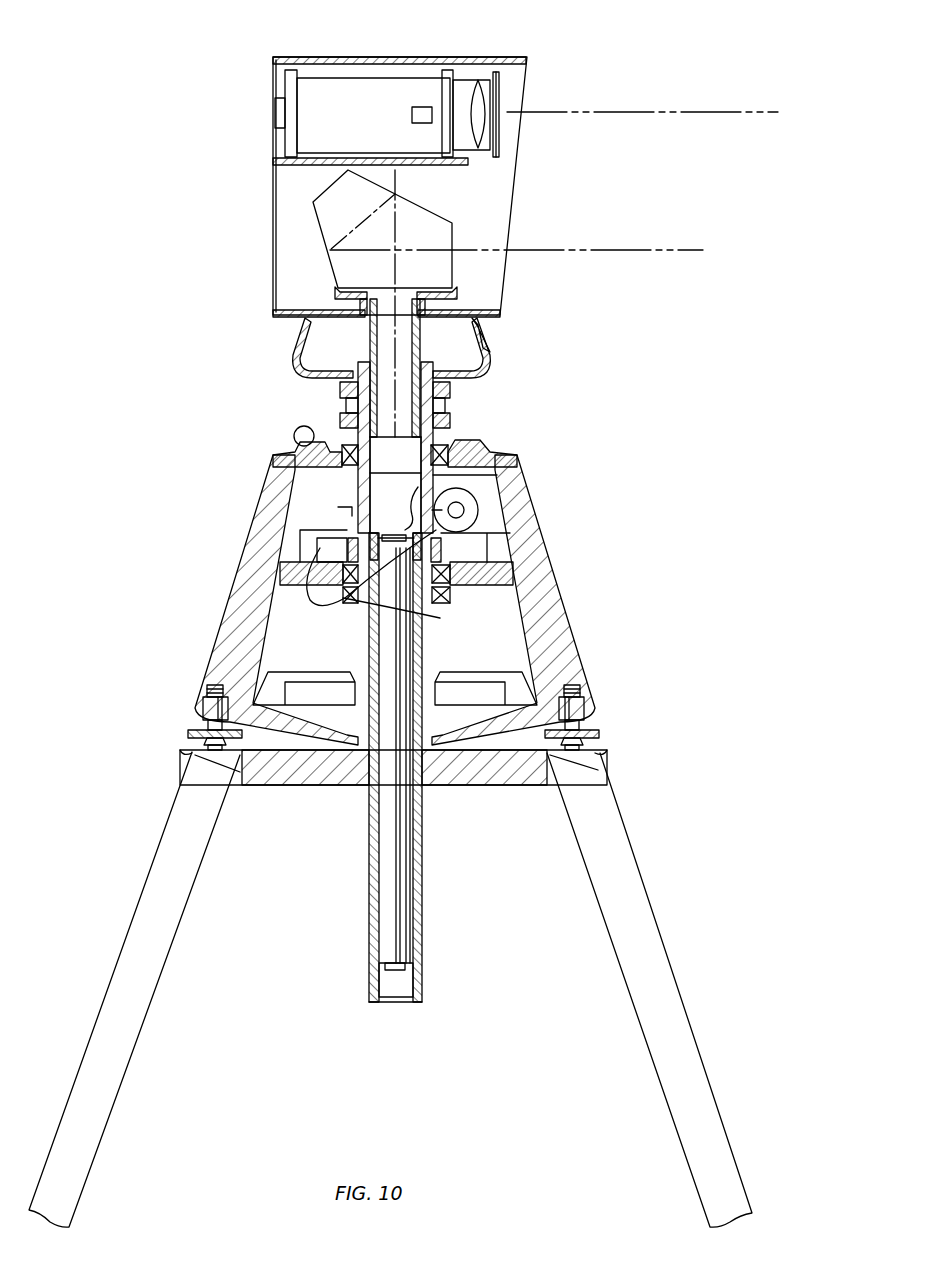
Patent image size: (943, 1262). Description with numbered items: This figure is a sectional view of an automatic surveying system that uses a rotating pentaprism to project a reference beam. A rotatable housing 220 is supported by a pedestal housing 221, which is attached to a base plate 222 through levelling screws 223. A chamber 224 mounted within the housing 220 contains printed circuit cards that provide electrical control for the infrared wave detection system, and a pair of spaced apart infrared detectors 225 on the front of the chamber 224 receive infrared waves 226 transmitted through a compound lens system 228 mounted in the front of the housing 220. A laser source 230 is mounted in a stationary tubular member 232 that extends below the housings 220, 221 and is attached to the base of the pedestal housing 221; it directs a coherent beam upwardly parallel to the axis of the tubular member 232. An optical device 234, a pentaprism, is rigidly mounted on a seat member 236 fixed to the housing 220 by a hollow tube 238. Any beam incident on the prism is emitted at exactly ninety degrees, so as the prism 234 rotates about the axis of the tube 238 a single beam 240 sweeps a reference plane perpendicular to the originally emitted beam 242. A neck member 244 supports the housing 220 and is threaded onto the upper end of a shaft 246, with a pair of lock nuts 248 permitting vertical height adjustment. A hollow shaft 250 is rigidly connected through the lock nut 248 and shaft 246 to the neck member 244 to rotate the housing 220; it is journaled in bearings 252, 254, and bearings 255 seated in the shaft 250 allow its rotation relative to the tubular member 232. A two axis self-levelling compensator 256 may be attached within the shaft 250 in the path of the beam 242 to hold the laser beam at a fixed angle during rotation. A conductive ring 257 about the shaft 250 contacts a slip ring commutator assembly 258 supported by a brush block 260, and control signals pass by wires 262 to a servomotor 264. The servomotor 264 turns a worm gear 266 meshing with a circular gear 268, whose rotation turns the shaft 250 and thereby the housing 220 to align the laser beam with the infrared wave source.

The rotatable housing 220 is at (498, 57).
The pedestal housing 221 is at (570, 650).
The base plate 222 is at (518, 785).
The levelling screws 223 is at (590, 735).
The chamber 224 is at (343, 78).
The infrared detectors 225 is at (424, 113).
The infrared waves 226 is at (641, 110).
The compound lens system 228 is at (486, 110).
The laser source 230 is at (403, 933).
The stationary tubular member 232 is at (422, 918).
The optical device 234 is at (442, 213).
The seat member 236 is at (455, 293).
The hollow tube 238 is at (487, 324).
The single beam 240 is at (646, 248).
The originally emitted beam 242 is at (497, 475).
The neck member 244 is at (494, 371).
The shaft 246 is at (356, 365).
The lock nuts 248 is at (452, 414).
The hollow shaft 250 is at (338, 402).
The bearing 252 is at (297, 446).
The bearing 254 is at (450, 583).
The bearings 255 is at (440, 605).
The two axis self-levelling compensator 256 is at (378, 490).
The conductive ring 257 is at (445, 548).
The slip ring commutator assembly 258 is at (352, 538).
The brush block 260 is at (330, 548).
The wires 262 is at (312, 597).
The servomotor 264 is at (476, 515).
The worm gear 266 is at (462, 510).
The circular gear 268 is at (340, 507).